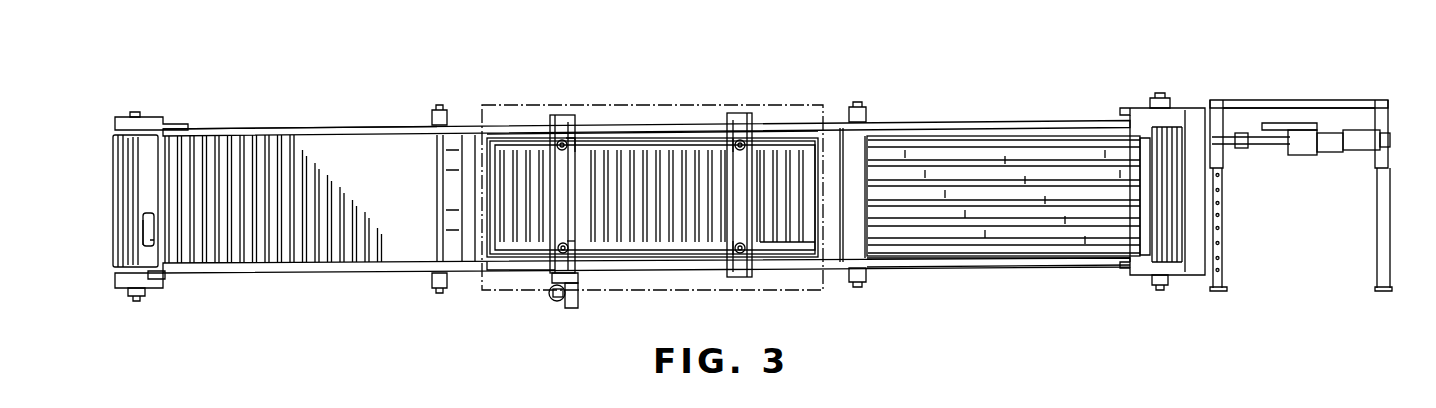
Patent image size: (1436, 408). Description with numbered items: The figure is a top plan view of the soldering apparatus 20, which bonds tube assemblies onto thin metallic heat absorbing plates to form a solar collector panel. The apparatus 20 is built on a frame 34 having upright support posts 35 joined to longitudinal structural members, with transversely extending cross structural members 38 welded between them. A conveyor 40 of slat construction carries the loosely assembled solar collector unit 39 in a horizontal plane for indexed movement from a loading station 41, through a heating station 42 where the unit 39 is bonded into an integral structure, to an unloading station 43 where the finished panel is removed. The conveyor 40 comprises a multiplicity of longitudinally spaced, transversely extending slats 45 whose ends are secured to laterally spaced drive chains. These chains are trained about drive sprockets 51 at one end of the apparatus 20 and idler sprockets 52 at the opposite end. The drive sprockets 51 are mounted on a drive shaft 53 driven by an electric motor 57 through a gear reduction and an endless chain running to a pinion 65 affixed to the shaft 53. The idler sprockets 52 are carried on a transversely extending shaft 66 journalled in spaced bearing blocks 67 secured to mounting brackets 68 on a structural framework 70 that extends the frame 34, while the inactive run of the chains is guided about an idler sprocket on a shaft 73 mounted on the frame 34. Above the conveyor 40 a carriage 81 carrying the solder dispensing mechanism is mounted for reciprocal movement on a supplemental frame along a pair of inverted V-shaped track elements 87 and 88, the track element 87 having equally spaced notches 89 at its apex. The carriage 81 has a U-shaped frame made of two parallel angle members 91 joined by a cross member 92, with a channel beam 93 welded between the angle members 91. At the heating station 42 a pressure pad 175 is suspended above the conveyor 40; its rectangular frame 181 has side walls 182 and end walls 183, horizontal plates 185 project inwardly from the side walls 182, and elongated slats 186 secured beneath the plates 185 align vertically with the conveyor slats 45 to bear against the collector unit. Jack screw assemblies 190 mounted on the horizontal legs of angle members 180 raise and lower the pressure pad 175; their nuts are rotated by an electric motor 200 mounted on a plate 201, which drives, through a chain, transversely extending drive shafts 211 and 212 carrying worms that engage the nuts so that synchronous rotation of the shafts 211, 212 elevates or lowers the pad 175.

The soldering apparatus 20 is at (300, 343).
The frame 34 is at (925, 275).
The upright support posts 35 is at (440, 108).
The cross structural members 38 is at (462, 150).
The solar collector unit 39 is at (935, 130).
The conveyor 40 is at (235, 135).
The loading station 41 is at (1000, 100).
The heating station 42 is at (665, 100).
The unloading station 43 is at (312, 113).
The slats 45 is at (120, 157).
The drive sprockets 51 is at (146, 122).
The idler sprockets 52 is at (1170, 125).
The drive shaft 53 is at (135, 200).
The electric motor 57 is at (148, 242).
The pinion 65 is at (133, 297).
The shaft 66 is at (1162, 235).
The bearing blocks 67 is at (1160, 98).
The mounting brackets 68 is at (1138, 108).
The structural framework 70 is at (1177, 293).
The shaft 73 is at (440, 177).
The carriage 81 is at (1392, 118).
The track element 87 is at (1225, 265).
The track element 88 is at (1380, 228).
The notches 89 is at (1220, 215).
The angle members 91 is at (1217, 110).
The cross member 92 is at (1275, 100).
The channel beam 93 is at (1255, 145).
The pressure pad 175 is at (787, 130).
The angle members 180 is at (557, 125).
The frame 181 is at (490, 273).
The side walls 182 is at (500, 138).
The end walls 183 is at (490, 210).
The horizontal plates 185 is at (636, 150).
The slats 186 is at (784, 232).
The jack screw assemblies 190 is at (562, 140).
The electric motor 200 is at (563, 310).
The plate 201 is at (578, 293).
The drive shaft 211 is at (735, 165).
The drive shaft 212 is at (570, 162).